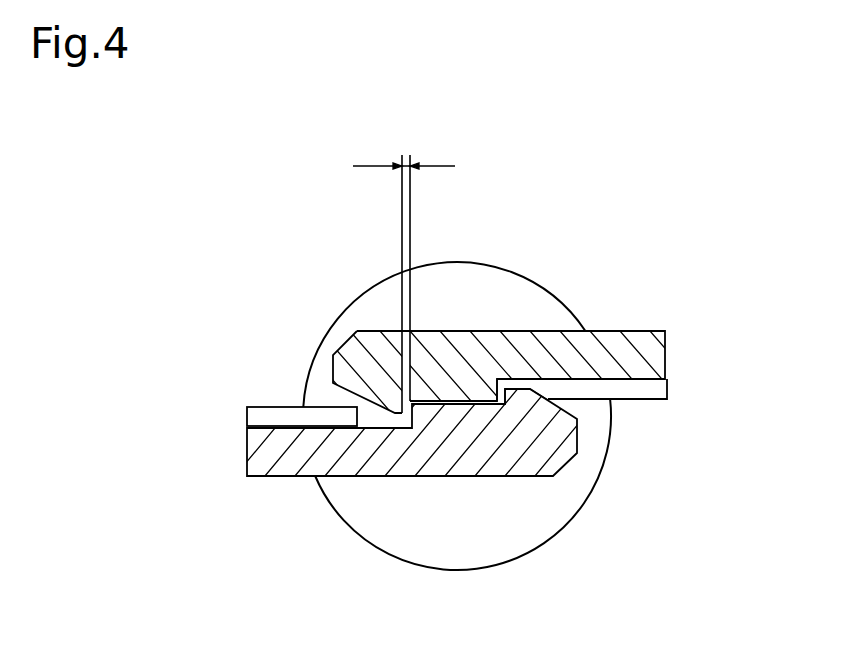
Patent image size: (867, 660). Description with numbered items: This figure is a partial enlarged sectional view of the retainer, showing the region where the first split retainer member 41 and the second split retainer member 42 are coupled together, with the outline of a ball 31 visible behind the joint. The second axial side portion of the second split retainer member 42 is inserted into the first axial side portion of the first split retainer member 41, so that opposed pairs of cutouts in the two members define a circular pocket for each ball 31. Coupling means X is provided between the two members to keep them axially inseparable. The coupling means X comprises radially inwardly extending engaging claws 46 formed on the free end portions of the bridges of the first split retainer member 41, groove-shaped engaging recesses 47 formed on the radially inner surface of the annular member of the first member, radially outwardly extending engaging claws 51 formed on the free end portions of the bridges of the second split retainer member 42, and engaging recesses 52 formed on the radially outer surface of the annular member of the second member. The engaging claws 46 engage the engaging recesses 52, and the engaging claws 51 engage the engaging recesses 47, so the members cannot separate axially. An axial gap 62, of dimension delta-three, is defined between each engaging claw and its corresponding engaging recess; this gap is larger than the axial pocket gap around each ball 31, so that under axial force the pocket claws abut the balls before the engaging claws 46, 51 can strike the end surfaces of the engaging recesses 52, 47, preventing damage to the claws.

The ball 31 is at (545, 307).
The first split retainer member 41 is at (659, 328).
The second split retainer member 42 is at (243, 457).
The engaging claw 46 is at (386, 411).
The engaging recess 47 is at (638, 392).
The engaging claw 51 is at (518, 392).
The engaging recess 52 is at (267, 413).
The axial gap 62 is at (400, 416).
The coupling means X is at (547, 392).